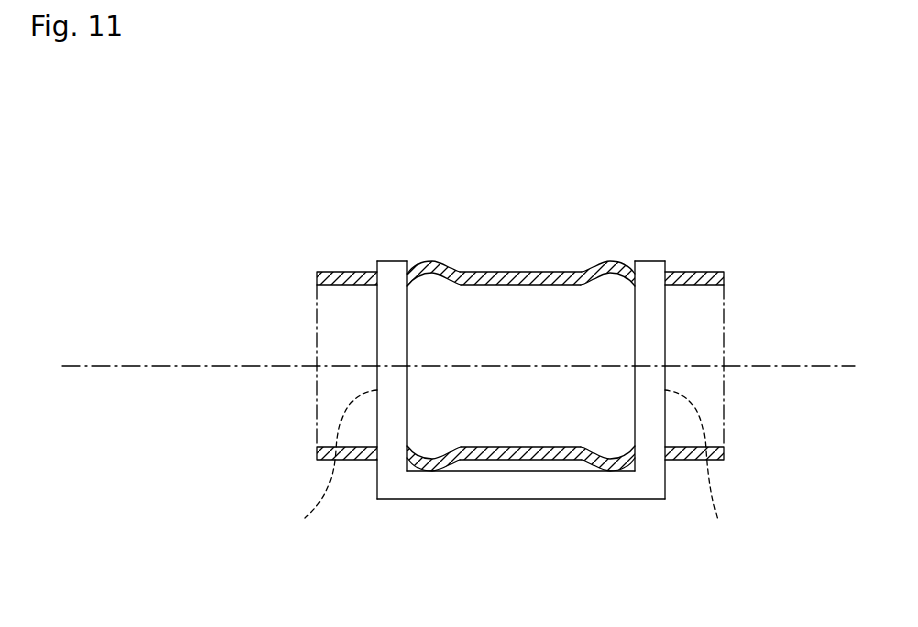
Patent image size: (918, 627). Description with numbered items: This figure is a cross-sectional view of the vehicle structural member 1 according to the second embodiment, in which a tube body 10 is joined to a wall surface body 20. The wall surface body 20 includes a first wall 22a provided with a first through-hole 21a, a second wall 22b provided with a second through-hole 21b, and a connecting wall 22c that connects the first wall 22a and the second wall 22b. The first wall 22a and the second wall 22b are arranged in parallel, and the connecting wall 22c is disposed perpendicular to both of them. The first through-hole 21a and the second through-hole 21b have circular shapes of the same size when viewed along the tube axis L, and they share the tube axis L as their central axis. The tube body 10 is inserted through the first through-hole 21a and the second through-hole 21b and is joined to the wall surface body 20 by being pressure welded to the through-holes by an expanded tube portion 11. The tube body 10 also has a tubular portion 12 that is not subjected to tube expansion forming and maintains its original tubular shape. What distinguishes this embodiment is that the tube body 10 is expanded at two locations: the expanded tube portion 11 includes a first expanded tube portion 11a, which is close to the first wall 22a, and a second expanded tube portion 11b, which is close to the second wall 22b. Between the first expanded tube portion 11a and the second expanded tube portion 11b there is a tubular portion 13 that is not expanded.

The vehicle structural member 1 is at (705, 145).
The tube body 10 is at (318, 273).
The expanded tube portion 11 is at (521, 334).
The first expanded tube portion 11a is at (437, 263).
The second expanded tube portion 11b is at (607, 263).
The tubular portion 12 is at (353, 272).
The tubular portion 13 is at (520, 272).
The wall surface body 20 is at (377, 346).
The first through-hole 21a is at (331, 467).
The second through-hole 21b is at (712, 467).
The first wall 22a is at (377, 485).
The second wall 22b is at (665, 484).
The connecting wall 22c is at (518, 499).
The tube axis L is at (458, 342).